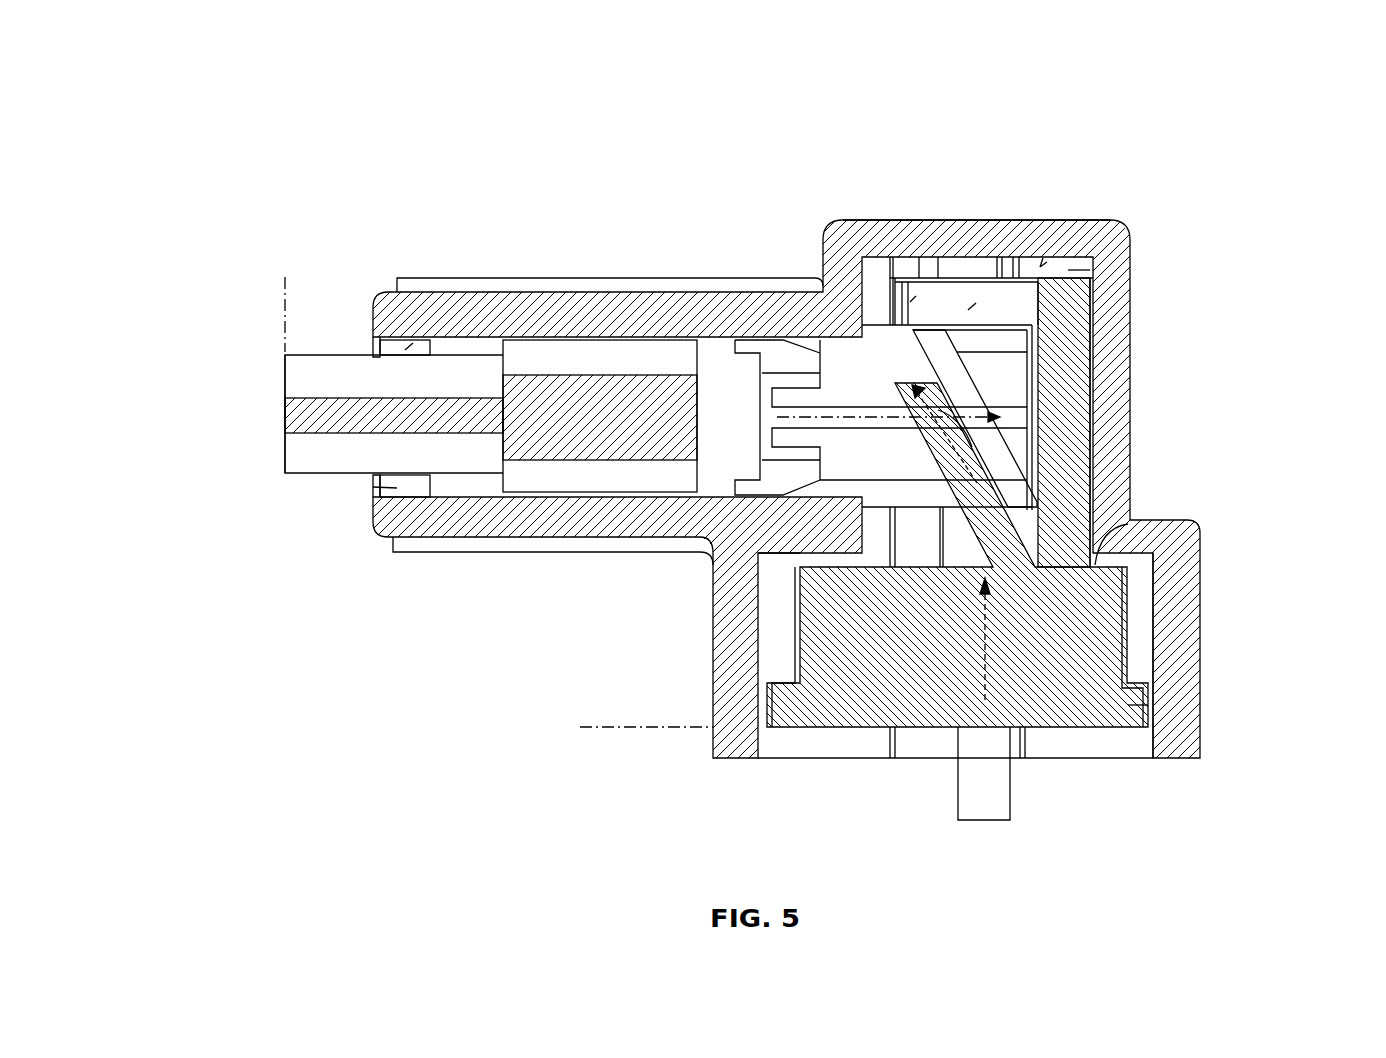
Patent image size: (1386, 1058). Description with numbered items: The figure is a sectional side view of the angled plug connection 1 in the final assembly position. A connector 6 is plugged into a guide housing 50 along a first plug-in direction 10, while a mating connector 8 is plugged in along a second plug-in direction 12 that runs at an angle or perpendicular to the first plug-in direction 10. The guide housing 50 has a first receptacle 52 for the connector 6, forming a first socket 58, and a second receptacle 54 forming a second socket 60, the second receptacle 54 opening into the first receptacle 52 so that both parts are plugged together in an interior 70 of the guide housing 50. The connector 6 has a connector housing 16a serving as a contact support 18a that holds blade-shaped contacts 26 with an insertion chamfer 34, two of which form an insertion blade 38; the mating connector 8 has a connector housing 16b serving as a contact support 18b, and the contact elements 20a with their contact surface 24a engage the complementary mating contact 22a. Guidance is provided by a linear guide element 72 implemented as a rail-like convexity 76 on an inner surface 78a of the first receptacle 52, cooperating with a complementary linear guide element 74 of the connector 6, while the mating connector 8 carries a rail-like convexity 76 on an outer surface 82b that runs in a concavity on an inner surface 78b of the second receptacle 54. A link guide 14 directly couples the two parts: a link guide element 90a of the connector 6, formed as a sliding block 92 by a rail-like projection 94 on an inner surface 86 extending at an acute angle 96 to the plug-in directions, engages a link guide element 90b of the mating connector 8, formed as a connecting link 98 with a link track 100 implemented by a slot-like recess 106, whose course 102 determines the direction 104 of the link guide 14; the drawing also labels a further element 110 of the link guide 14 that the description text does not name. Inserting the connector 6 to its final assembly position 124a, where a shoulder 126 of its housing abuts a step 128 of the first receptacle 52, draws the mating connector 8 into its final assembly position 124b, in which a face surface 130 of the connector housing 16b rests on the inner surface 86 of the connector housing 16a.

The angled plug connection 1 is at (288, 110).
The connector 6 is at (1128, 705).
The mating connector 8 is at (312, 278).
The first plug-in direction 10 is at (985, 647).
The second plug-in direction 12 is at (852, 417).
The link guide 14 is at (950, 419).
The connector housing 16a is at (944, 693).
The connector housing 16b is at (598, 346).
The contact support 18a is at (857, 693).
The contact support 18b is at (613, 430).
The contact element 20a is at (1123, 214).
The mating contact 22a is at (1123, 214).
The contact surface 24a is at (968, 310).
The blade-shaped contact 26 is at (1017, 313).
The insertion chamfer 34 is at (929, 249).
The insertion blade 38 is at (910, 302).
The guide housing 50 is at (1123, 217).
The first receptacle 52 is at (1037, 775).
The second receptacle 54 is at (300, 474).
The first socket 58 is at (1057, 772).
The second socket 60 is at (340, 487).
The interior 70 is at (1070, 270).
The linear guide element 72 is at (967, 273).
The complementary linear guide element 74 is at (326, 414).
The rail-like convexity 76 is at (303, 419).
The inner surface 78a is at (1040, 267).
The inner surface 78b is at (373, 487).
The outer surface 82b is at (407, 350).
The inner surface 86 is at (1035, 440).
The link guide element 90a is at (1056, 555).
The link guide element 90b is at (796, 309).
The sliding block 92 is at (1056, 555).
The rail-like projection 94 is at (980, 507).
The acute angle 96 is at (971, 434).
The connecting link 98 is at (796, 309).
The link track 100 is at (796, 309).
The course 102 is at (1127, 338).
The direction 104 is at (985, 395).
The slot-like recess 106 is at (796, 309).
The flap tip 110 is at (900, 370).
The final assembly position 124a is at (607, 740).
The final assembly position 124b is at (285, 300).
The shoulder 126 is at (1108, 567).
The step 128 is at (1100, 555).
The face surface 130 is at (1035, 390).